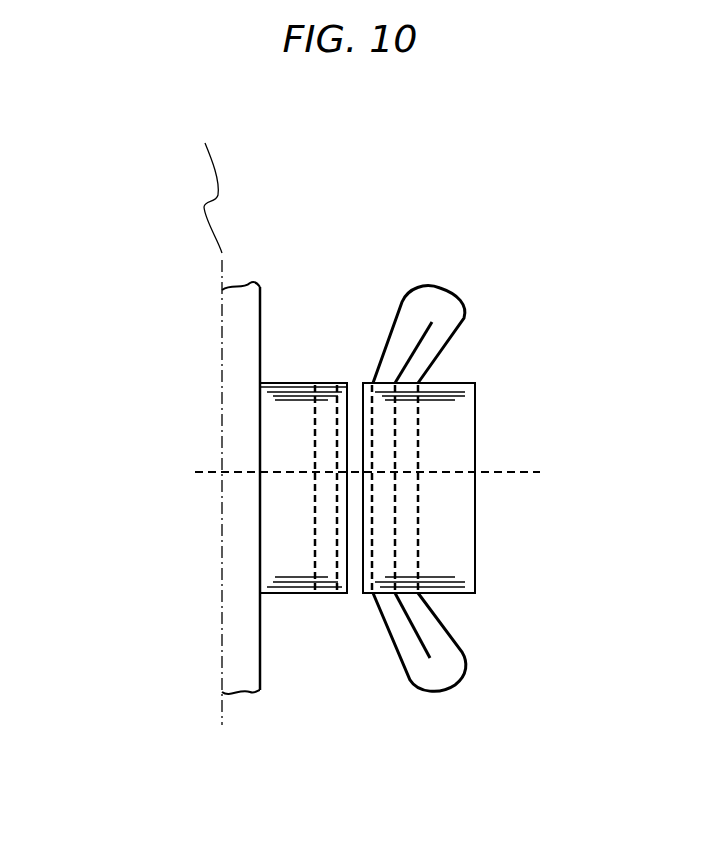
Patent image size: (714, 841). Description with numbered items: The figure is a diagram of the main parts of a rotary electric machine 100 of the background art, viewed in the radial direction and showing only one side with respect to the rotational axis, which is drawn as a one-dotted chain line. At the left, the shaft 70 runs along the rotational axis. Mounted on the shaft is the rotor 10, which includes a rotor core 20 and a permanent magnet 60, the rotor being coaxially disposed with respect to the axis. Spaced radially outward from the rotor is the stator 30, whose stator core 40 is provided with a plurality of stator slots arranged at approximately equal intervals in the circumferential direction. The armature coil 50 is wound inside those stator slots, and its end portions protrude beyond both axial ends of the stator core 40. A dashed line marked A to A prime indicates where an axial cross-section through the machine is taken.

The rotary electric machine 100 is at (127, 213).
The rotor 10 is at (325, 373).
The rotor core 20 is at (280, 417).
The stator 30 is at (485, 590).
The stator core 40 is at (433, 493).
The armature coil 50 is at (437, 303).
The permanent magnet 60 is at (322, 535).
The shaft 70 is at (238, 318).